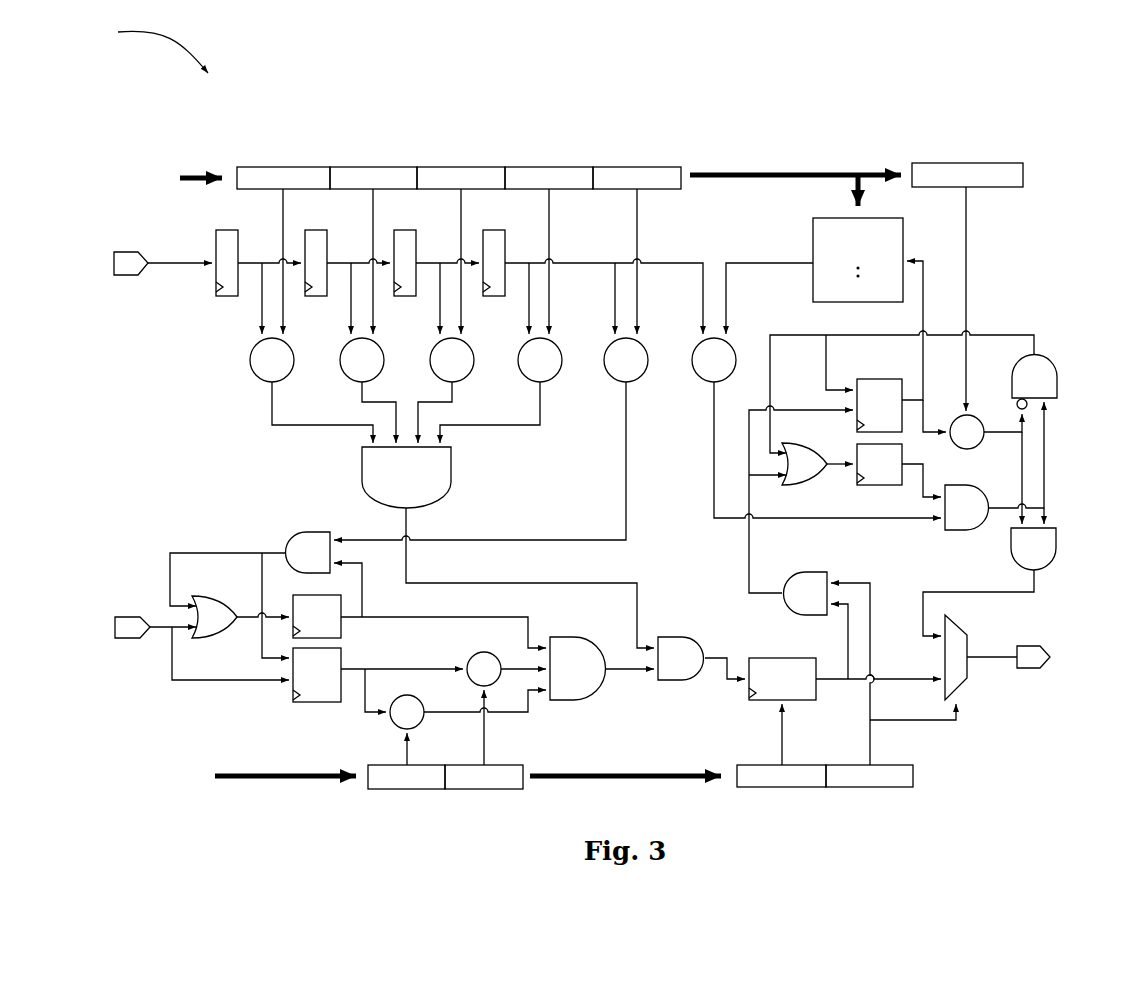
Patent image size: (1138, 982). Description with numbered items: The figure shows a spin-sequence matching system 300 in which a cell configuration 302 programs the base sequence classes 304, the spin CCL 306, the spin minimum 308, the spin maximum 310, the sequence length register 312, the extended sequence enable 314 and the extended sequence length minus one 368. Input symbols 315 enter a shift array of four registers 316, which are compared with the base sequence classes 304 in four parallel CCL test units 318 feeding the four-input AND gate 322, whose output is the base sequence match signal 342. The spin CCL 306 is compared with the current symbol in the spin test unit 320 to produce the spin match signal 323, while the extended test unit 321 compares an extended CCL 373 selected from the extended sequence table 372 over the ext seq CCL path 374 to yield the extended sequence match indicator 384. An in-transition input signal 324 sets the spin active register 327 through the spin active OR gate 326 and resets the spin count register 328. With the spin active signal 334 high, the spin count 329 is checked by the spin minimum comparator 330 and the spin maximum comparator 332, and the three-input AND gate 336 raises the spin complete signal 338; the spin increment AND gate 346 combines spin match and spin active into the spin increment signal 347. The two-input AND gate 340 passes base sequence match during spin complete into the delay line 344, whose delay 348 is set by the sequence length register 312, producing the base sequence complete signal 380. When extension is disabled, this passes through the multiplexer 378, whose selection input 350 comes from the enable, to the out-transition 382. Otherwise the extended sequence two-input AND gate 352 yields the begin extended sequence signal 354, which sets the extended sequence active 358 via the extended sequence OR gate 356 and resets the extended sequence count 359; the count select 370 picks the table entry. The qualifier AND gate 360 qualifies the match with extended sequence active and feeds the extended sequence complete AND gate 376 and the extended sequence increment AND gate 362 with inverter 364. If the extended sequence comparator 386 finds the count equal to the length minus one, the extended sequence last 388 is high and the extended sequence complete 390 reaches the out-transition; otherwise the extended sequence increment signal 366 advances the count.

The system 300 is at (146, 47).
The cell configuration 302 is at (151, 163).
The base sequence classes 304 is at (553, 165).
The spin CCL 306 is at (627, 162).
The spin minimum 308 is at (402, 790).
The spin maximum 310 is at (468, 790).
The sequence length register 312 is at (773, 788).
The extended sequence enable 314 is at (868, 788).
The input symbols 315 is at (113, 262).
The registers 316 is at (213, 242).
The CCL test units 318 is at (294, 367).
The spin test unit 320 is at (641, 376).
The extended test unit 321 is at (732, 343).
The four input AND gate 322 is at (452, 482).
The spin match signal 323 is at (556, 551).
The in-transition input signal 324 is at (110, 615).
The spin active OR gate 326 is at (202, 639).
The spin active register 327 is at (342, 620).
The spin count register 328 is at (290, 698).
The spin count 329 is at (378, 657).
The spin minimum comparator 330 is at (430, 686).
The spin maximum comparator 332 is at (488, 652).
The spin active signal 334 is at (438, 633).
The 3-input AND gate 336 is at (565, 700).
The spin complete signal 338 is at (638, 695).
The 2-input AND gate 340 is at (676, 636).
The base sequence match signal 342 is at (577, 595).
The delay line 344 is at (782, 657).
The spin increment AND gate 346 is at (303, 530).
The spin increment signal 347 is at (193, 535).
The delay 348 is at (813, 720).
The selection input 350 is at (967, 717).
The extended sequence 2-input AND gate 352 is at (803, 572).
The begin extended sequence signal 354 is at (718, 563).
The extended sequence OR gate 356 is at (806, 443).
The extended sequence active 358 is at (903, 455).
The extended sequence count 359 is at (880, 378).
The qualifier AND gate 360 is at (965, 530).
The extended sequence increment AND gate 362 is at (1057, 380).
The inverter 364 is at (1016, 406).
The extended sequence increment signal 366 is at (1032, 320).
The extended sequence length-1 368 is at (982, 162).
The count select 370 is at (922, 240).
The extended sequence table 372 is at (813, 228).
The extended CCL 373 is at (846, 242).
The ext seq CCL signal 374 is at (720, 252).
The extended sequence complete AND gate 376 is at (1057, 545).
The multiplexer 378 is at (965, 682).
The base sequence complete signal 380 is at (895, 650).
The out-transition 382 is at (1038, 646).
The extended sequence match indicator 384 is at (858, 529).
The extended sequence comparator 386 is at (957, 419).
The extended sequence last 388 is at (1000, 463).
The extended sequence complete 390 is at (924, 583).